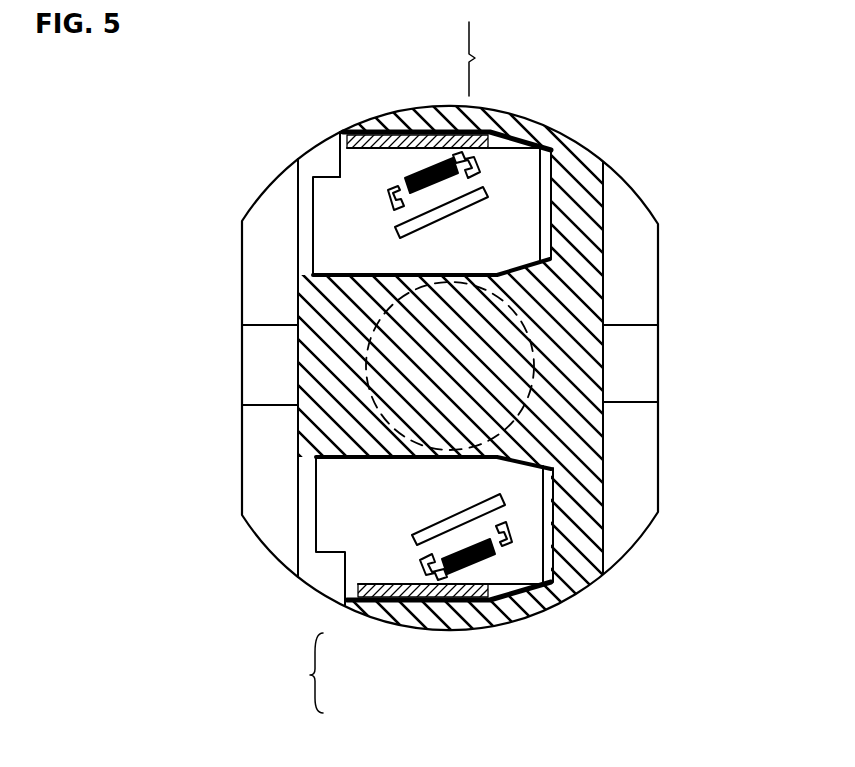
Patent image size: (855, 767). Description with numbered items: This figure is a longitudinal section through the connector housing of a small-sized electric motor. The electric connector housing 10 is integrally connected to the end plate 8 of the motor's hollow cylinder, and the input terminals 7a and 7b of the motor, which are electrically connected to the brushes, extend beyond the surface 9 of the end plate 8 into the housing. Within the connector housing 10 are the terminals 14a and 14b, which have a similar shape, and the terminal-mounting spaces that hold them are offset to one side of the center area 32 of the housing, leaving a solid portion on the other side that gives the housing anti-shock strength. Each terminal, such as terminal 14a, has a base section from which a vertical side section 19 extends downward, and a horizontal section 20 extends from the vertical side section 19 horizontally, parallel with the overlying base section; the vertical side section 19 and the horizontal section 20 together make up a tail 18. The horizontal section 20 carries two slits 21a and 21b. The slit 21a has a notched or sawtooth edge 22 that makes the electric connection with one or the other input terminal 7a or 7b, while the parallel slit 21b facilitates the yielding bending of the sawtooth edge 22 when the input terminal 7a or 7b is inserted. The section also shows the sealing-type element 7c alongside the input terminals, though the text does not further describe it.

The input terminal 7a is at (462, 602).
The input terminal 7b is at (476, 129).
The seal member 7c is at (440, 160).
The end plate 8 is at (314, 160).
The surface 9 is at (328, 167).
The electric connector housing 10 is at (337, 407).
The terminal 14a is at (336, 571).
The terminal 14b is at (559, 194).
The tail 18 is at (396, 367).
The vertical side section 19 is at (392, 117).
The horizontal section 20 is at (354, 172).
The slit 21a is at (463, 153).
The slit 21b is at (487, 190).
The notched or sawtooth edge 22 is at (408, 192).
The center area 32 is at (453, 358).